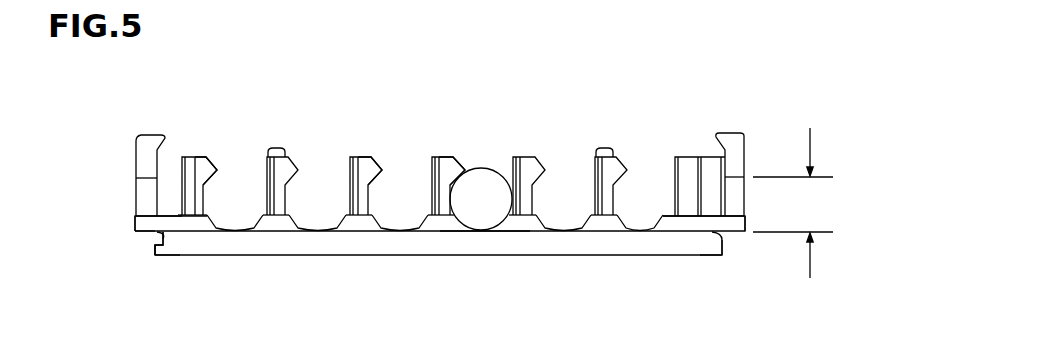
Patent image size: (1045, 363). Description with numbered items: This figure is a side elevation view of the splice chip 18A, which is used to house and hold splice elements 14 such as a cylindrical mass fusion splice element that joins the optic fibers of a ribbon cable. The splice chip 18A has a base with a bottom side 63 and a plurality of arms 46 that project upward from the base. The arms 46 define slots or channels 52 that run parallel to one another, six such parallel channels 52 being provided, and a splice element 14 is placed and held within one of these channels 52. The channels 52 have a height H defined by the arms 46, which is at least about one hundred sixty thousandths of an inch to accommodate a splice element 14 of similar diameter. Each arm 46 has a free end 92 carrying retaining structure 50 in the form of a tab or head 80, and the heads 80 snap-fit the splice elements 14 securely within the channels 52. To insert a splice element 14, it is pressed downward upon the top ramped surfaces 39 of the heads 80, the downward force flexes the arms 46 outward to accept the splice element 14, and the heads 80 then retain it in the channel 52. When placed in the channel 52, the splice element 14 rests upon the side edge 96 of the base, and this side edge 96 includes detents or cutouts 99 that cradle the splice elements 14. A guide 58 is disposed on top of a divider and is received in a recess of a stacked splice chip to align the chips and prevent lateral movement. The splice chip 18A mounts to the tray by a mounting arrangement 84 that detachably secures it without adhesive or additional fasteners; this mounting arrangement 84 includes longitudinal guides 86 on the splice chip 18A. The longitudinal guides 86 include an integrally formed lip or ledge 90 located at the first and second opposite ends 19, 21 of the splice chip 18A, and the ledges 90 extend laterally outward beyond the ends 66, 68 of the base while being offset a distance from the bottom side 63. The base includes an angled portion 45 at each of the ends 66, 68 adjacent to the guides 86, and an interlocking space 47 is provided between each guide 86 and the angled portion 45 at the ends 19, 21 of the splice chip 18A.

The splice chip 18A is at (626, 66).
The splice element 14 is at (490, 168).
The first end of the splice chip 19 is at (790, 280).
The second end of the splice chip 21 is at (93, 271).
The top ramped surface 39 is at (458, 162).
The angled portion 45 is at (163, 238).
The arm 46 is at (292, 160).
The interlocking space 47 is at (107, 235).
The retaining structure 50 is at (390, 145).
The channel 52 is at (392, 232).
The guide 58 is at (275, 150).
The bottom side of the base 63 is at (562, 253).
The end of the base 66 is at (713, 248).
The end of the base 68 is at (168, 245).
The head 80 is at (208, 162).
The mounting arrangement 84 is at (131, 274).
The longitudinal guide 86 is at (148, 276).
The ledge 90 is at (147, 215).
The free end of the arm 92 is at (193, 157).
The first side edge of the base 96 is at (485, 243).
The cutout 99 is at (218, 225).
The height of the channels H is at (793, 203).